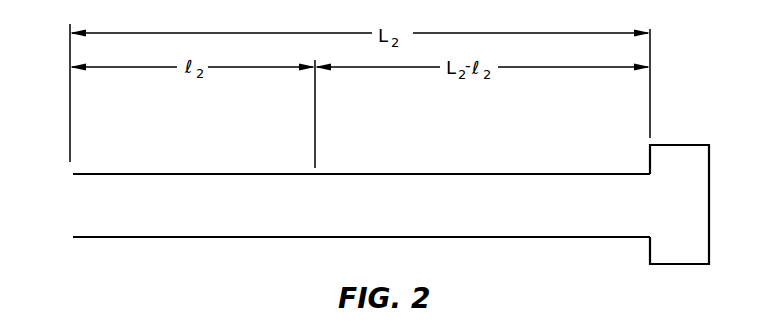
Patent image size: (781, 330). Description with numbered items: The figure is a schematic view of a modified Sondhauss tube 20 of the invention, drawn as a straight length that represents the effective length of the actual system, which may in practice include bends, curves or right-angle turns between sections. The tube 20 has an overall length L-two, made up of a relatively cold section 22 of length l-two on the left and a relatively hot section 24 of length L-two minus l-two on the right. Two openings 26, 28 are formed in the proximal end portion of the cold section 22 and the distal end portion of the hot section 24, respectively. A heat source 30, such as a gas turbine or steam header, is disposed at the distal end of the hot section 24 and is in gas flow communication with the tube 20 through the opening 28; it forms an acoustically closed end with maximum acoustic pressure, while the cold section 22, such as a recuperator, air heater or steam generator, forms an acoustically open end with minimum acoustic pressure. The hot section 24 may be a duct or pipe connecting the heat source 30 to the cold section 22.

The tube 20 is at (361, 158).
The relatively cold section 22 is at (145, 174).
The relatively hot section 24 is at (457, 174).
The opening 26 is at (85, 203).
The opening 28 is at (665, 200).
The heat source 30 is at (709, 210).